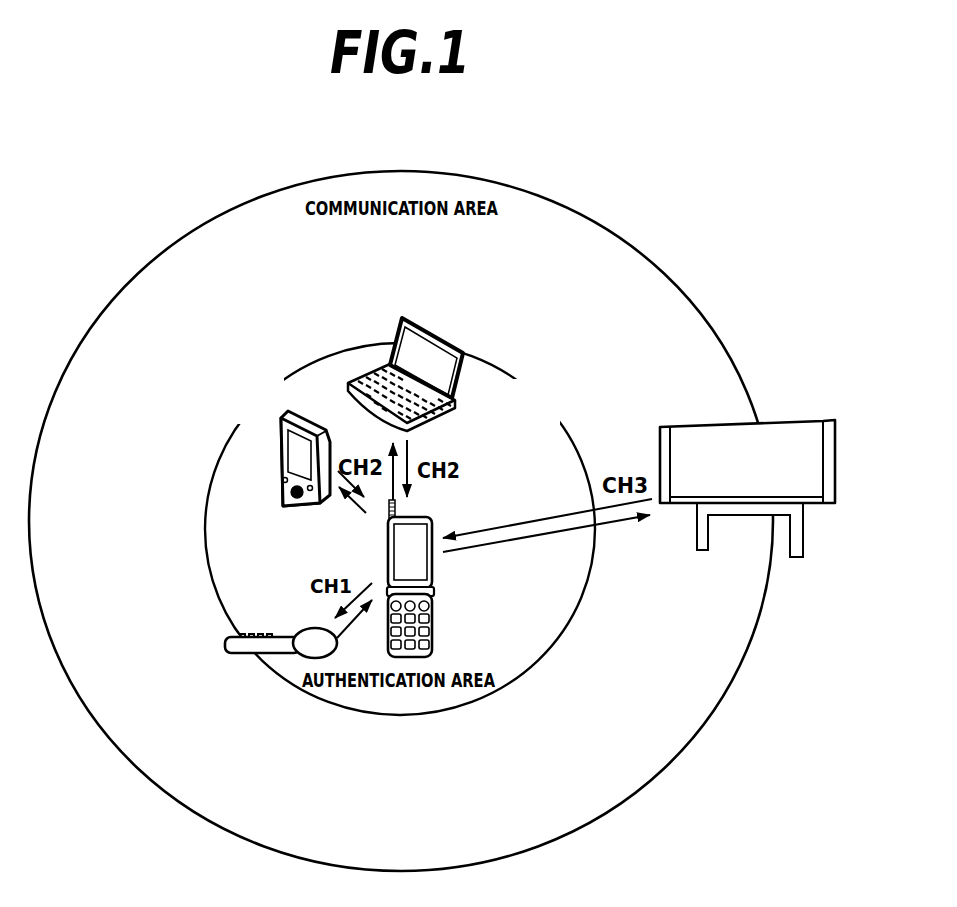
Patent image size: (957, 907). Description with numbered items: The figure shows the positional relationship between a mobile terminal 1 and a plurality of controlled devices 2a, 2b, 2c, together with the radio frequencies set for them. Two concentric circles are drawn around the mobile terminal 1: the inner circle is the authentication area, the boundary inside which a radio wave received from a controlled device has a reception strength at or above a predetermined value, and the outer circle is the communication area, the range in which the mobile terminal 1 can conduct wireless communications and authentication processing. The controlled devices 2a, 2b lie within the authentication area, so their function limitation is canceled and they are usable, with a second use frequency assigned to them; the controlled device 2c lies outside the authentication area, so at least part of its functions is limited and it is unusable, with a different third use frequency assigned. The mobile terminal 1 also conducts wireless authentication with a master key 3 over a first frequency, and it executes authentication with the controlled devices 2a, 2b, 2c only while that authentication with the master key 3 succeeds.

The mobile terminal 1 is at (497, 578).
The controlled device 2a is at (263, 440).
The controlled device 2b is at (454, 374).
The controlled device 2c is at (757, 460).
The master key 3 is at (234, 654).